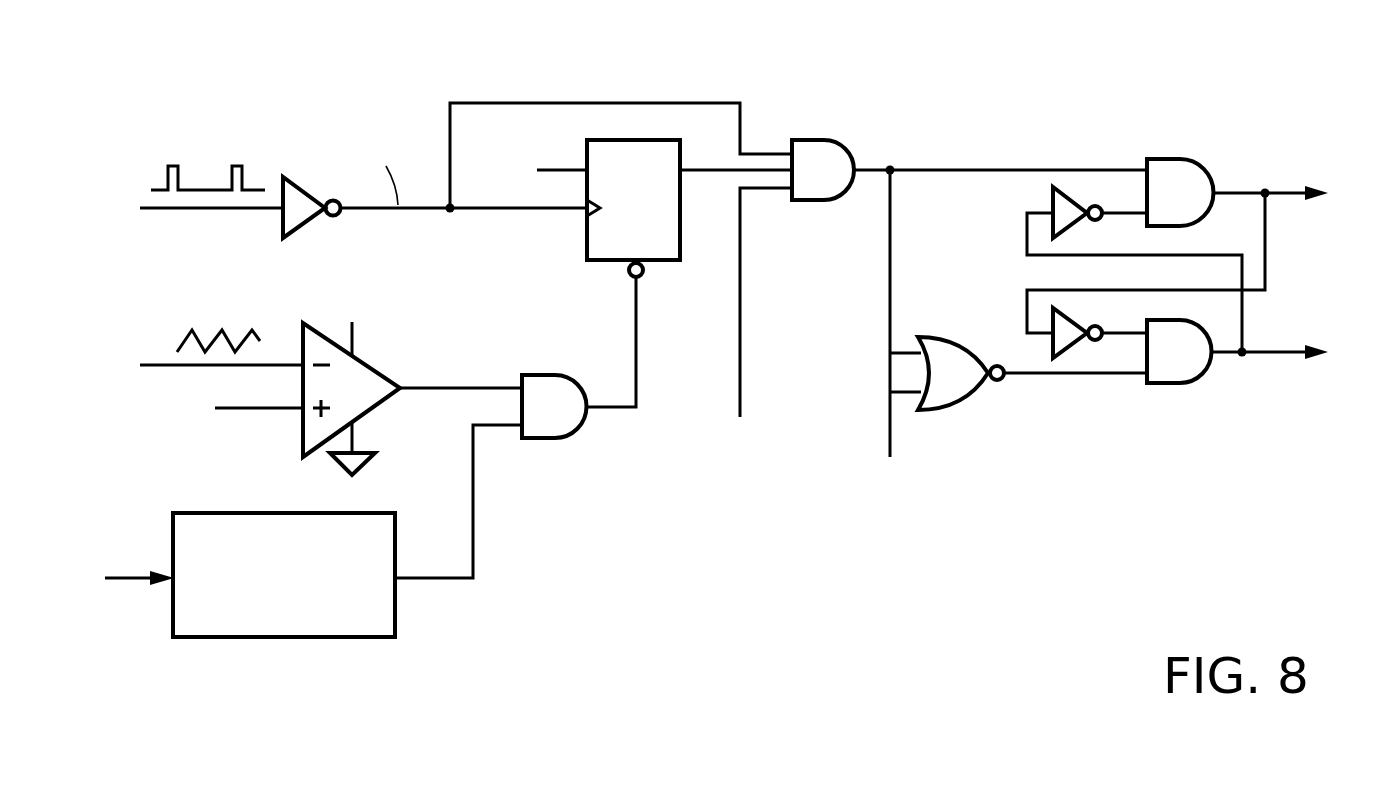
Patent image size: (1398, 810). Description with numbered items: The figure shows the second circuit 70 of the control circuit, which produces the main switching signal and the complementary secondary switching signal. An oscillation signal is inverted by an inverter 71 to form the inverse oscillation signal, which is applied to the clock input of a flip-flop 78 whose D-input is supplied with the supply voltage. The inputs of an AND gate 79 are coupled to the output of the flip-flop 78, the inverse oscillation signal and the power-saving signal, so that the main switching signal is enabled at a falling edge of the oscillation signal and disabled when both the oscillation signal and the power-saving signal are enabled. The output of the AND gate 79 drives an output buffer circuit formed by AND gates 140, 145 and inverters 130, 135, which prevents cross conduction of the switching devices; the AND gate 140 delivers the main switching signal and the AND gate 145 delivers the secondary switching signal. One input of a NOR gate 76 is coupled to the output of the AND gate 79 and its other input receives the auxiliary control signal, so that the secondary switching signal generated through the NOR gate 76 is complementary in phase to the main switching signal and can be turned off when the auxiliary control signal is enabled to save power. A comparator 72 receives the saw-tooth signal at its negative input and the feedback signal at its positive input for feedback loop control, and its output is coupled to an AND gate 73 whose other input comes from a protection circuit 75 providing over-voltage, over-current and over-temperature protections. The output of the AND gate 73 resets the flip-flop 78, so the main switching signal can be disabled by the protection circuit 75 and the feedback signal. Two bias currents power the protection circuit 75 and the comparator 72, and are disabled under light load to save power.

The second circuit 70 is at (1313, 33).
The inverter 71 is at (305, 178).
The comparator 72 is at (375, 415).
The AND gate 73 is at (552, 442).
The protection circuit 75 is at (345, 640).
The NOR gate 76 is at (955, 410).
The flip-flop 78 is at (668, 265).
The AND gate 79 is at (822, 132).
The inverter 130 is at (1072, 193).
The inverter 135 is at (1072, 353).
The AND gate 140 is at (1172, 158).
The AND gate 145 is at (1175, 385).